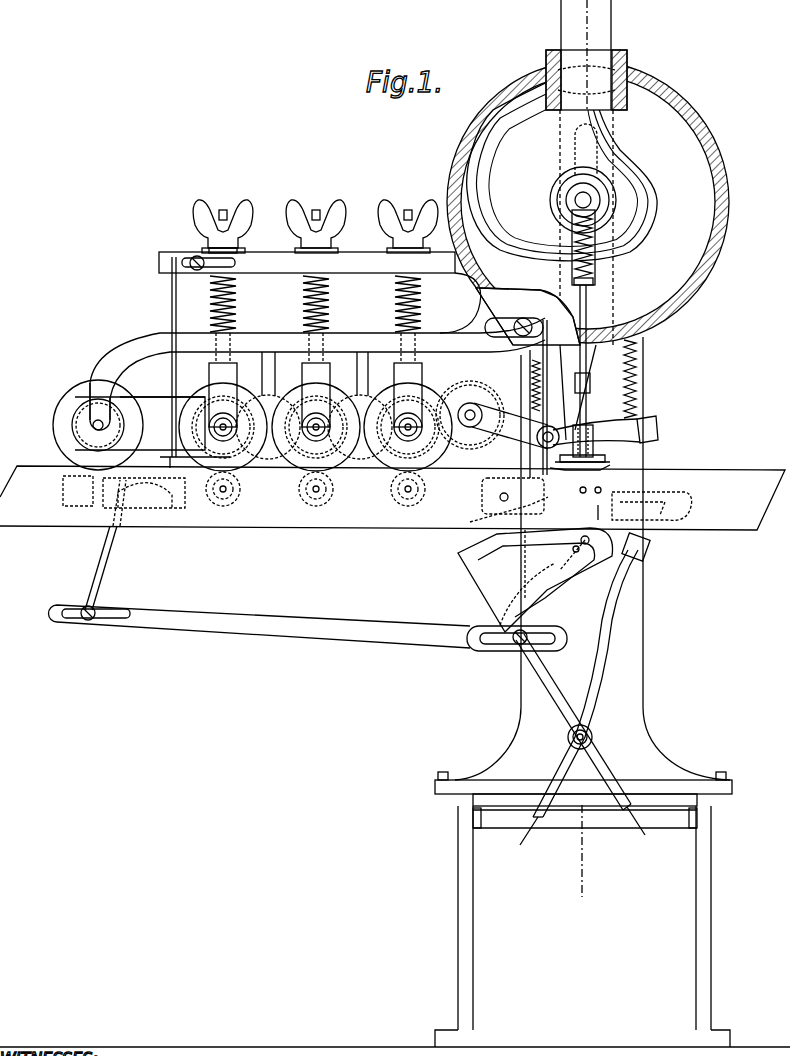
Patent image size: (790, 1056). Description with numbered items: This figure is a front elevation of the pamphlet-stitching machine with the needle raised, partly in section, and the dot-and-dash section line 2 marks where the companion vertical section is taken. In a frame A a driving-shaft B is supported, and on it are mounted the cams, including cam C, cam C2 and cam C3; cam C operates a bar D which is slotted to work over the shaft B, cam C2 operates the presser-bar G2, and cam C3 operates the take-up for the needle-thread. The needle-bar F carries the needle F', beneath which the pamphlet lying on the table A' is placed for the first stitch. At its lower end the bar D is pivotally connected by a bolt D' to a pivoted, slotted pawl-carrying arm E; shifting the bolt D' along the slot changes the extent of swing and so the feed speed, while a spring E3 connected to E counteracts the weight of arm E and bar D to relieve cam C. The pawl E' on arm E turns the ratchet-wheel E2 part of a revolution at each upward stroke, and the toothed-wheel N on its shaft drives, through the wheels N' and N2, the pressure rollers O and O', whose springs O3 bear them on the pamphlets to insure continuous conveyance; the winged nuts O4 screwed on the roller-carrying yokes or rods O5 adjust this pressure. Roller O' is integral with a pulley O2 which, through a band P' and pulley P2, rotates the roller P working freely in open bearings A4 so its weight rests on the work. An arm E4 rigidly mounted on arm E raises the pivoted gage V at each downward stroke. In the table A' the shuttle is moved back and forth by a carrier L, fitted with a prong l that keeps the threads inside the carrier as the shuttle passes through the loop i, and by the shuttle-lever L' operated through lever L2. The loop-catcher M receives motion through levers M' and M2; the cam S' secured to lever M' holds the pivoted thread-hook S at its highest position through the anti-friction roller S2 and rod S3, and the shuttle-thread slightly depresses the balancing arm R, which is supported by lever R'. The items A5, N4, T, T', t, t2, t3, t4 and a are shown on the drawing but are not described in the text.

The frame A is at (395, 649).
The table A' is at (392, 498).
The open bearings A4 is at (92, 395).
The frame bracket A5 is at (592, 464).
The driving-shaft B is at (583, 200).
The cam C is at (587, 447).
The cam C2 is at (552, 214).
The cam C3 is at (588, 202).
The bar D is at (523, 396).
The bolt D' is at (515, 438).
The pawl-carrying arm E is at (619, 430).
The pawl E' is at (520, 385).
The ratchet-wheel E2 is at (468, 406).
The spring E3 is at (638, 388).
The arm E4 is at (591, 385).
The needle-bar F is at (587, 333).
The needle F' is at (588, 392).
The presser-bar G2 is at (599, 436).
The carrier L is at (655, 503).
The shuttle-lever L' is at (591, 675).
The lever L2 is at (522, 841).
The loop-catcher M is at (525, 580).
The lever M' is at (573, 722).
The lever M2 is at (647, 829).
The toothed-wheel N is at (470, 403).
The wheel N' is at (381, 409).
The wheel N2 is at (270, 460).
The gear N4 is at (290, 409).
The pressure roller O is at (362, 427).
The pressure roller O' is at (223, 427).
The pulley O2 is at (212, 408).
The springs O3 is at (328, 319).
The winged nuts O4 is at (200, 202).
The roller-carrying yokes or rods O5 is at (228, 212).
The roller P is at (140, 423).
The band P' is at (162, 385).
The pulley P2 is at (70, 432).
The balancing arm or lever R is at (517, 496).
The lever R' is at (510, 509).
The thread-hook S is at (580, 506).
The cam S' is at (533, 594).
The anti-friction roller S2 is at (578, 561).
The rod S3 is at (532, 565).
The bar T is at (189, 465).
The lever T' is at (308, 630).
The rod t is at (105, 545).
The slide t2 is at (132, 491).
The rod t3 is at (172, 436).
The screw t4 is at (180, 258).
The gage V is at (533, 414).
The pin a is at (578, 495).
The loop i is at (598, 495).
The prong l is at (595, 515).
The section line 2 is at (581, 864).